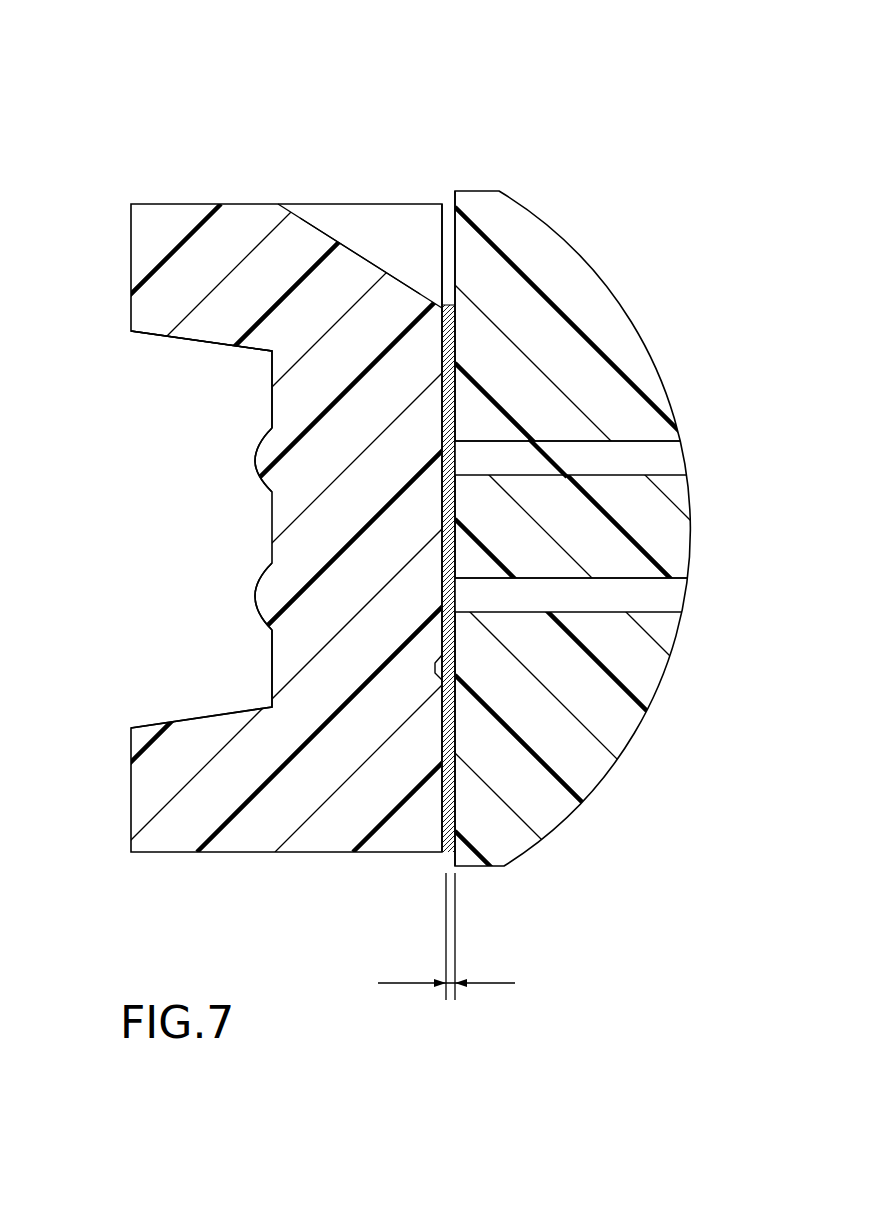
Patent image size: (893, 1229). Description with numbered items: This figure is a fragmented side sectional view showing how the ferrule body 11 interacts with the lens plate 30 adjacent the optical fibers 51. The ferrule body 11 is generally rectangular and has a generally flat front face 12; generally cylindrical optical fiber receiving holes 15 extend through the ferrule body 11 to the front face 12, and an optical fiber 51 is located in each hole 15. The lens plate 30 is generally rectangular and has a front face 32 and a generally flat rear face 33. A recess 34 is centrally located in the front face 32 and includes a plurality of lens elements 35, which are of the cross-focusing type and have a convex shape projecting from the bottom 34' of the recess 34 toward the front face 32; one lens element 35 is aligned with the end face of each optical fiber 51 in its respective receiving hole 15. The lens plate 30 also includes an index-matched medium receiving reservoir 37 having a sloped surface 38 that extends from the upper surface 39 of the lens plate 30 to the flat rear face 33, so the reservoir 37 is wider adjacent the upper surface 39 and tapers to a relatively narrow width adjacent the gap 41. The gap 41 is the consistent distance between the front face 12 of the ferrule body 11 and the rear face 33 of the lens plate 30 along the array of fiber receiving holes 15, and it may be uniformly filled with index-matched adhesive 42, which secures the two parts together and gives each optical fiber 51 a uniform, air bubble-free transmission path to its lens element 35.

The lens plate 30 is at (131, 242).
The front face 32 is at (131, 310).
The recess 34 is at (170, 379).
The bottom of recess 34' is at (167, 679).
The lens elements 35 is at (167, 529).
The index-matched medium receiving reservoir 37 is at (350, 218).
The sloped surface 38 is at (373, 267).
The upper surface 39 is at (257, 207).
The ferrule body 11 is at (522, 235).
The front face 12 is at (460, 690).
The optical fiber receiving holes 15 is at (573, 442).
The optical fibers 51 is at (653, 452).
The rear face 33 is at (457, 718).
The index-matched adhesive 42 is at (457, 797).
The gap 41 is at (446, 1000).